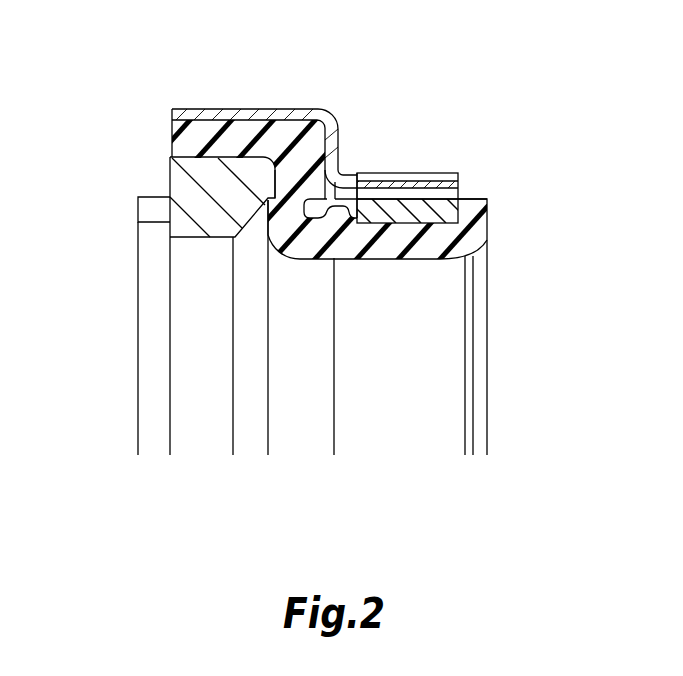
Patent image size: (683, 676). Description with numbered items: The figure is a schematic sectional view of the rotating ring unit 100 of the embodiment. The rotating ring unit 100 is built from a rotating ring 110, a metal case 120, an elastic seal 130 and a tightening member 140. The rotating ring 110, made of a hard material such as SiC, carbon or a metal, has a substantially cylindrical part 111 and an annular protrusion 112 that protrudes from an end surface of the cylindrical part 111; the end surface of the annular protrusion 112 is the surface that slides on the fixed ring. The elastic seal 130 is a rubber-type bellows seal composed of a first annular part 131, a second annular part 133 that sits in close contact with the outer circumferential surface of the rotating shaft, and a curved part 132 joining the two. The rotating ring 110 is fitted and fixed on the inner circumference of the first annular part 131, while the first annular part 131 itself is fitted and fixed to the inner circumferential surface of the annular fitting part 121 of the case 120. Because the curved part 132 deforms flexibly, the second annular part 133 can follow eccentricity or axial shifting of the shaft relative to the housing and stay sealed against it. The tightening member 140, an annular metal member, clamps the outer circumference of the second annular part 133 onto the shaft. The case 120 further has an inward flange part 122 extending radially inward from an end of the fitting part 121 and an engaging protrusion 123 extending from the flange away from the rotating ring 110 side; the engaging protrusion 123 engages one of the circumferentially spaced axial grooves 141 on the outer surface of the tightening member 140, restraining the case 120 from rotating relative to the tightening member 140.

The rotating ring unit 100 is at (550, 84).
The rotating ring 110 is at (143, 172).
The cylindrical part 111 is at (212, 219).
The annular protrusion 112 is at (158, 222).
The metal case 120 is at (387, 56).
The annular fitting part 121 is at (252, 113).
The inward flange part 122 is at (338, 165).
The engaging protrusion 123 is at (440, 190).
The elastic seal 130 is at (516, 241).
The first annular part 131 is at (205, 132).
The curved part 132 is at (297, 245).
The second annular part 133 is at (423, 258).
The tightening member 140 is at (480, 184).
The grooves 141 is at (420, 188).